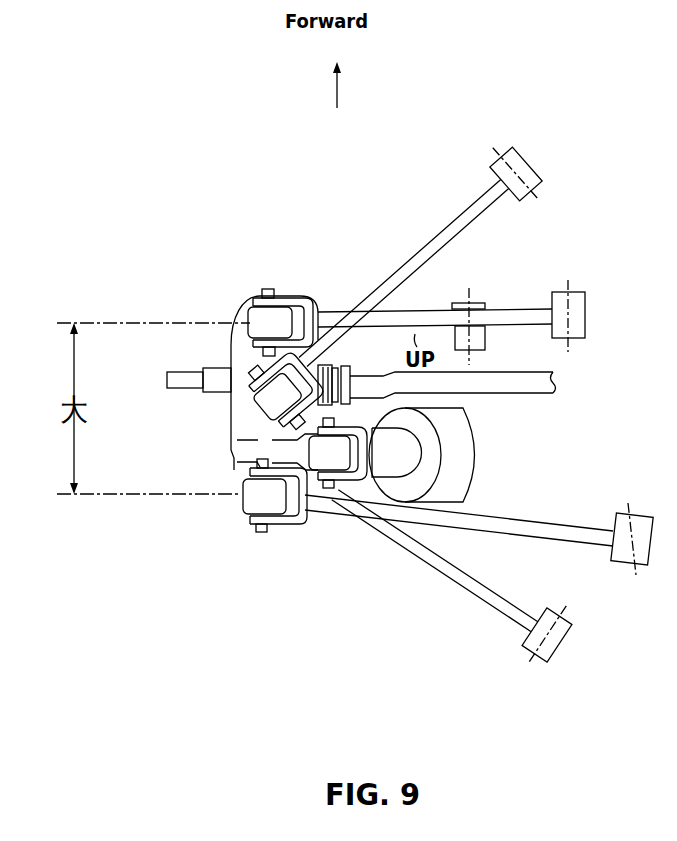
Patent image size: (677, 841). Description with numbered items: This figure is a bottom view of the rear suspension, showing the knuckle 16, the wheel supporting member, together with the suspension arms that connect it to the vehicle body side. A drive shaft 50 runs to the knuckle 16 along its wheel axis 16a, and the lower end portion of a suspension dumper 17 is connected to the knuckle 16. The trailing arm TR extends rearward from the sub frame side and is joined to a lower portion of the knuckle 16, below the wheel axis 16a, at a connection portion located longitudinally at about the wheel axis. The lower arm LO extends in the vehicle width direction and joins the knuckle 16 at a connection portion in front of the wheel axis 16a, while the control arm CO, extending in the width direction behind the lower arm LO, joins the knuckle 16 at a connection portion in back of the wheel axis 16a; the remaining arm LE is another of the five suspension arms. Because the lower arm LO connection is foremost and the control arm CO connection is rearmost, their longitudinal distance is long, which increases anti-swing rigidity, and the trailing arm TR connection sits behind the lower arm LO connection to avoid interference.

The knuckle 16 is at (238, 427).
The wheel axis 16a is at (185, 375).
The suspension dumper 17 is at (474, 453).
The drive shaft 50 is at (513, 374).
The lower arm LO is at (507, 312).
The trailing arm TR is at (435, 243).
The control arm CO is at (537, 528).
The suspension arm LE is at (456, 573).